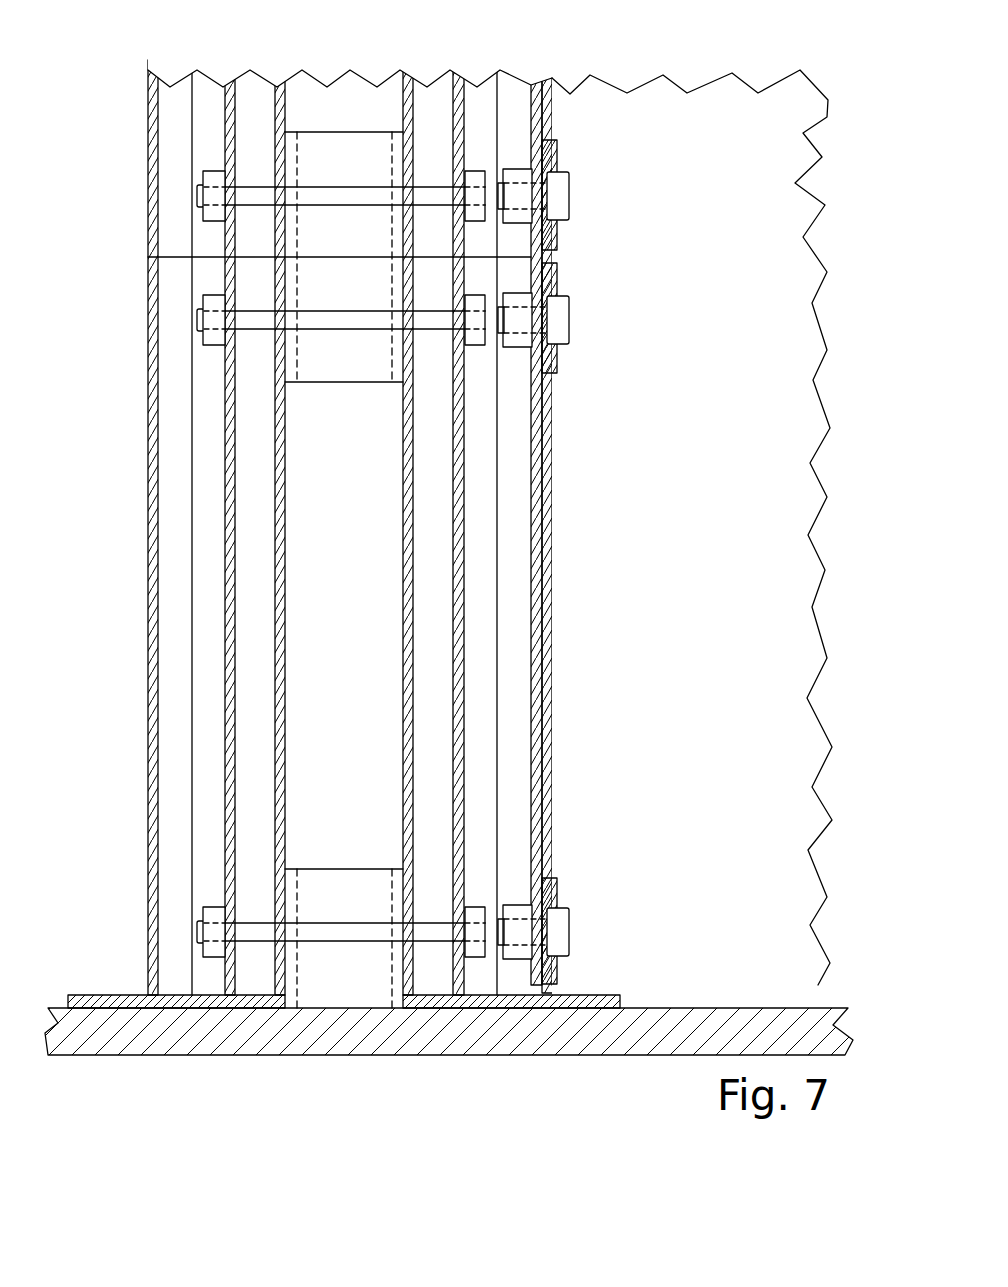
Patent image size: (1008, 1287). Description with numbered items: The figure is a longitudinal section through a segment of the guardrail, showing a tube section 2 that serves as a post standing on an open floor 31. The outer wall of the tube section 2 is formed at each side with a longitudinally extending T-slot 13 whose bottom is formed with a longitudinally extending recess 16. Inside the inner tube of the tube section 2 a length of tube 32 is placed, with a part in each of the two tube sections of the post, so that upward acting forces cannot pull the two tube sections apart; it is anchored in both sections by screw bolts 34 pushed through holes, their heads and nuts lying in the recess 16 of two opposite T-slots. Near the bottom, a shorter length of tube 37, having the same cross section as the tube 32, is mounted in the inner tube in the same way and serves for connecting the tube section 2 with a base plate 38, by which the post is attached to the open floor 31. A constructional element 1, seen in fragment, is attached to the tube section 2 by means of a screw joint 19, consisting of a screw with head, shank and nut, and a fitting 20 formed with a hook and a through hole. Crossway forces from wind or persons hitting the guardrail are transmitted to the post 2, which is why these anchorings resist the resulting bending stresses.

The constructional element 1 is at (805, 497).
The tube section 2 is at (158, 200).
The T-slot 13 is at (343, 504).
The recess 16 is at (200, 375).
The screw joint 19 is at (562, 197).
The fitting 20 is at (557, 156).
The open floor 31 is at (415, 1042).
The tube 32 is at (341, 370).
The screw bolt 34 is at (331, 195).
The tube 37 is at (343, 878).
The base plate 38 is at (90, 994).